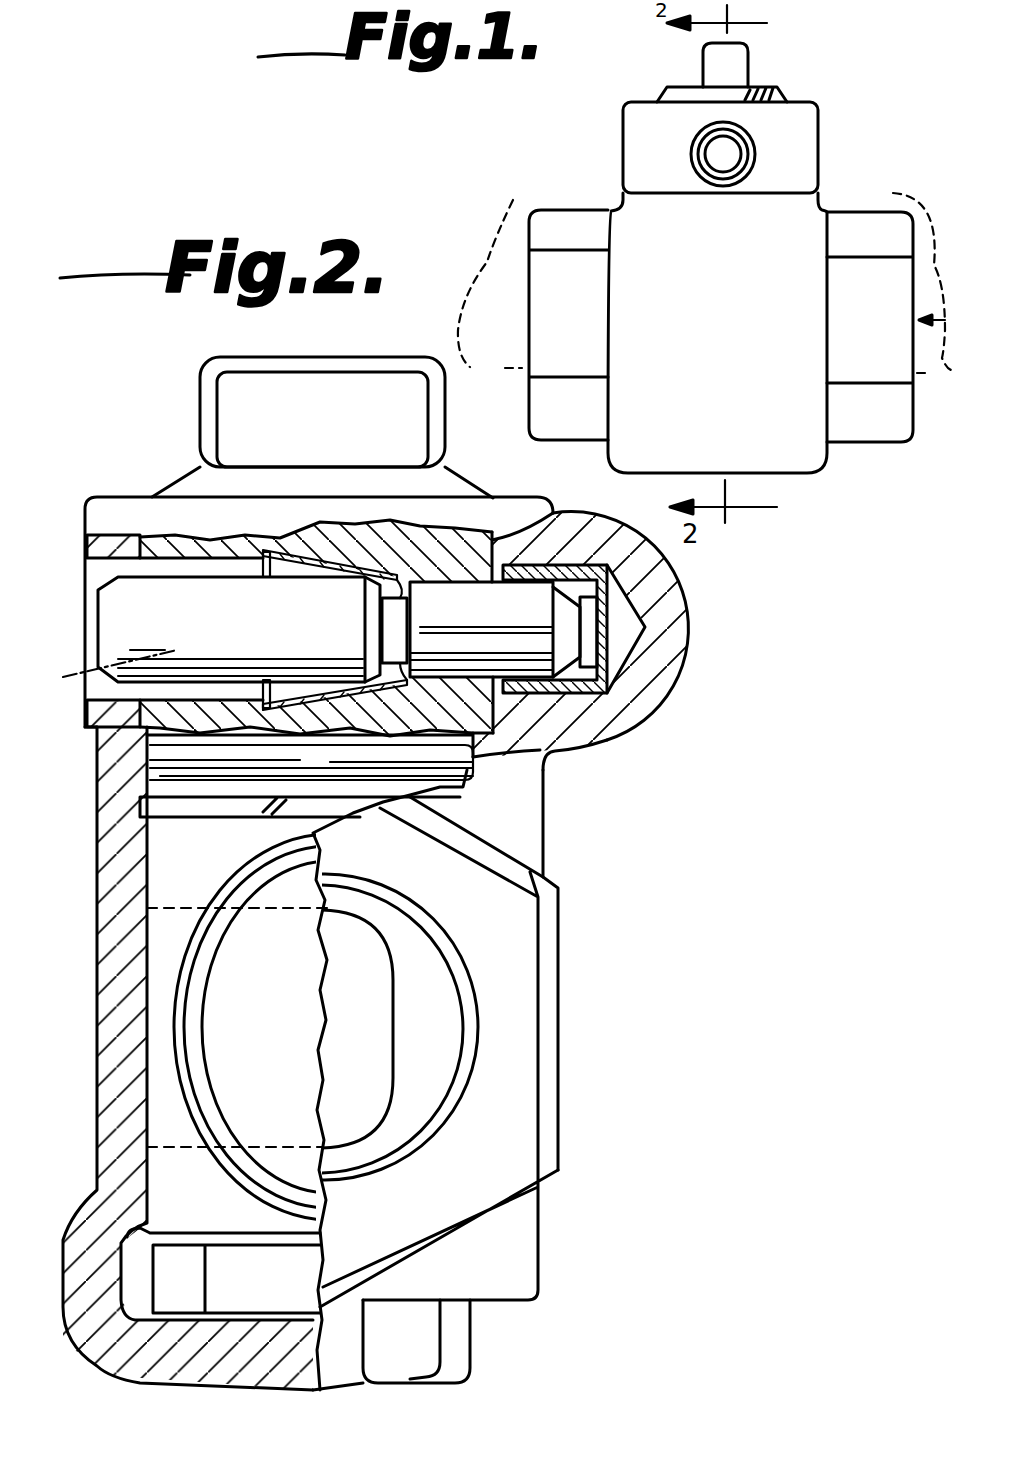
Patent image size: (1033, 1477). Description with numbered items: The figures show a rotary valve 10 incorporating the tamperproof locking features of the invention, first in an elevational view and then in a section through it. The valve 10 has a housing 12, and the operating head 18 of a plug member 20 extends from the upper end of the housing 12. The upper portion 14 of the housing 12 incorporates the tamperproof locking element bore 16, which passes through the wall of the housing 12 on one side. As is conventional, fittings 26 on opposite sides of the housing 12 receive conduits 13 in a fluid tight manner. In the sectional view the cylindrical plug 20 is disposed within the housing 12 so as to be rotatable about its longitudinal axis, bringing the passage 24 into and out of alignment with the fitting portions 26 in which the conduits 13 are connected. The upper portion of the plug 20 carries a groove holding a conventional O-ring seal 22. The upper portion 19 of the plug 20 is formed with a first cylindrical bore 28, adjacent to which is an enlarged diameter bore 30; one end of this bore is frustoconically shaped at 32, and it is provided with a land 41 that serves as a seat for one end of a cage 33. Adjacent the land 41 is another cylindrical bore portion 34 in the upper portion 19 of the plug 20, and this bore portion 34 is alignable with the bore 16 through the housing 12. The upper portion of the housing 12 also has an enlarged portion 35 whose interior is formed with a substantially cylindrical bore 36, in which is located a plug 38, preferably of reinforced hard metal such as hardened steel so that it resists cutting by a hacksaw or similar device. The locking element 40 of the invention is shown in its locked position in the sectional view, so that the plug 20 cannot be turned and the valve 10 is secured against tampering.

In FIG. 1, the rotary valve 10 is at (600, 157).
In FIG. 2, the rotary valve 10 is at (665, 885).
In FIG. 1, the housing 12 is at (797, 465).
In FIG. 2, the housing 12 is at (542, 823).
In FIG. 1, the conduits 13 is at (706, 275).
In FIG. 1, the upper portion of the housing 14 is at (810, 132).
In FIG. 2, the upper portion of the housing 14 is at (85, 640).
In FIG. 1, the locking element bore 16 is at (752, 134).
In FIG. 2, the locking element bore 16 is at (85, 557).
In FIG. 1, the operating head 18 is at (703, 58).
In FIG. 2, the operating head 18 is at (203, 405).
In FIG. 2, the upper portion of the plug 19 is at (150, 496).
In FIG. 2, the plug member 20 is at (160, 845).
In FIG. 2, the O-ring seal 22 is at (460, 778).
In FIG. 2, the passage 24 is at (187, 1143).
In FIG. 1, the fittings 26 is at (573, 363).
In FIG. 2, the fittings 26 is at (558, 1075).
In FIG. 2, the first cylindrical bore 28 is at (487, 543).
In FIG. 2, the enlarged diameter bore 30 is at (400, 530).
In FIG. 2, the frustoconically shaped end 32 is at (336, 510).
In FIG. 2, the cage 33 is at (386, 512).
In FIG. 2, the cylindrical bore portion 34 is at (160, 562).
In FIG. 2, the enlarged portion 35 is at (689, 613).
In FIG. 2, the cylindrical bore 36 is at (590, 732).
In FIG. 2, the plug 38 is at (605, 655).
In FIG. 2, the locking element 40 is at (106, 681).
In FIG. 2, the land 41 is at (266, 707).